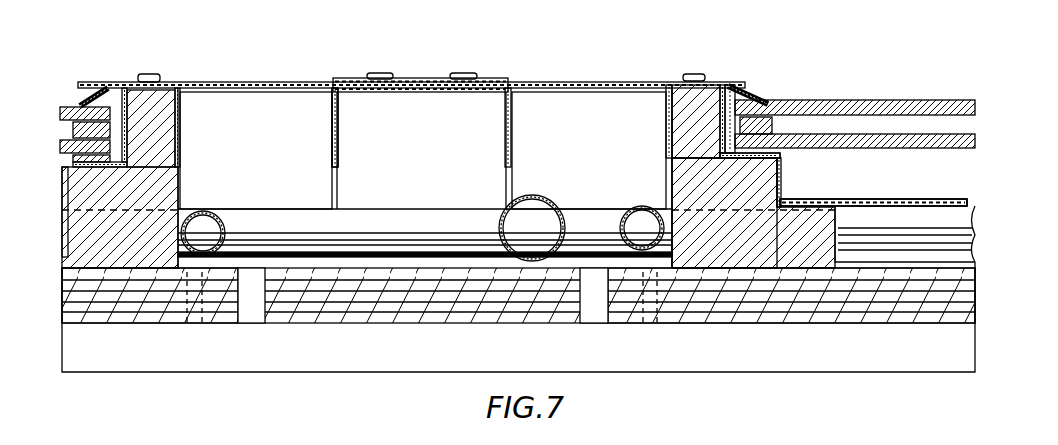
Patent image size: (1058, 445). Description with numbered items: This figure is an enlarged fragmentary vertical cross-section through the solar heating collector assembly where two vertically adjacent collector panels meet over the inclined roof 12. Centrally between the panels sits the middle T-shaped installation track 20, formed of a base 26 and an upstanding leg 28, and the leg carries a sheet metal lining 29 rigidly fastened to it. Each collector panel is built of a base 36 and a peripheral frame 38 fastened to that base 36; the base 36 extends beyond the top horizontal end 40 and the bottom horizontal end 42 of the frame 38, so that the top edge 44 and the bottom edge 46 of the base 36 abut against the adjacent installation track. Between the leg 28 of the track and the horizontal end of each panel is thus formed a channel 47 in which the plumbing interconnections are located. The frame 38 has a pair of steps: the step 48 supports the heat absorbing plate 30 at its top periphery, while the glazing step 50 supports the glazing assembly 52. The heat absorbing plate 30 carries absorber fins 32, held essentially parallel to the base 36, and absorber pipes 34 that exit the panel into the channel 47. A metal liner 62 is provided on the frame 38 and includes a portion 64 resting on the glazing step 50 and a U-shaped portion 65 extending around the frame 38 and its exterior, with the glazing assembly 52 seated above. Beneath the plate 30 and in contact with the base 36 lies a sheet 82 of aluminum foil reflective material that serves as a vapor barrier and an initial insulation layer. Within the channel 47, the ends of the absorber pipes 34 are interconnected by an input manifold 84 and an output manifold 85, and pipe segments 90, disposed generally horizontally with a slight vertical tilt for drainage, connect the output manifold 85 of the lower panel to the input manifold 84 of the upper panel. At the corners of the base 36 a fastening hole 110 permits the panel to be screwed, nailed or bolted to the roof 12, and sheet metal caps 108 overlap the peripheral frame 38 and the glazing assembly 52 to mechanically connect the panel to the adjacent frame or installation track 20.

The inclined roof 12 is at (468, 358).
The middle T-shaped installation track 20 is at (410, 153).
The base 26 is at (396, 300).
The leg 28 is at (490, 120).
The sheet metal lining 29 is at (333, 95).
The heat absorbing plate 30 is at (868, 200).
The absorber fins 32 is at (915, 200).
The absorber pipes 34 is at (852, 212).
The base 36 is at (118, 308).
The peripheral frame 38 is at (160, 196).
The top horizontal end 40 is at (180, 176).
The bottom horizontal end 42 is at (668, 165).
The top edge 44 is at (242, 308).
The bottom edge 46 is at (600, 310).
The channel 47 is at (242, 153).
The step 48 is at (790, 207).
The glazing step 50 is at (772, 170).
The glazing assembly 52 is at (852, 98).
The metal liner 62 is at (183, 103).
The portion 64 is at (782, 230).
The U-shaped portion 65 is at (180, 106).
The sheet of aluminum foil reflective material 82 is at (906, 250).
The input manifold 84 is at (628, 215).
The output manifold 85 is at (212, 222).
The pipe segments 90 is at (536, 196).
The sheet metal caps 108 is at (236, 81).
The fastening hole 110 is at (203, 325).